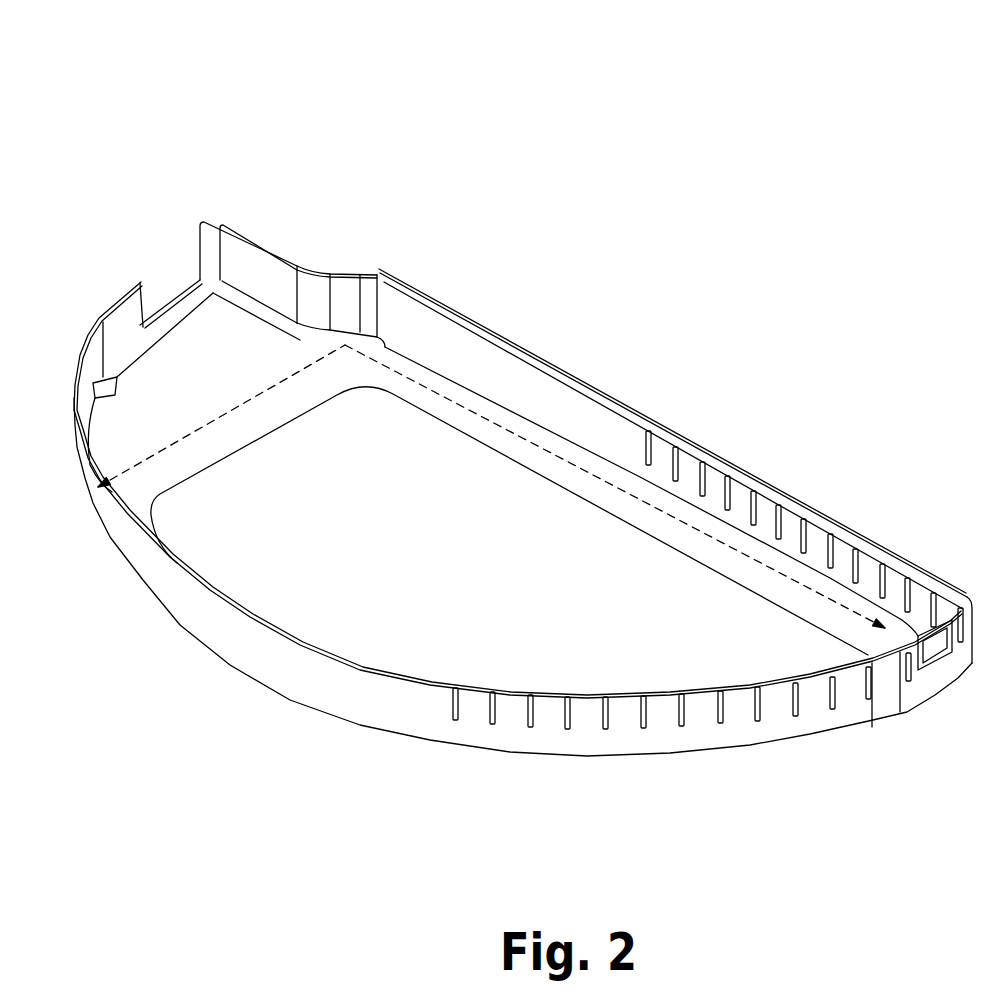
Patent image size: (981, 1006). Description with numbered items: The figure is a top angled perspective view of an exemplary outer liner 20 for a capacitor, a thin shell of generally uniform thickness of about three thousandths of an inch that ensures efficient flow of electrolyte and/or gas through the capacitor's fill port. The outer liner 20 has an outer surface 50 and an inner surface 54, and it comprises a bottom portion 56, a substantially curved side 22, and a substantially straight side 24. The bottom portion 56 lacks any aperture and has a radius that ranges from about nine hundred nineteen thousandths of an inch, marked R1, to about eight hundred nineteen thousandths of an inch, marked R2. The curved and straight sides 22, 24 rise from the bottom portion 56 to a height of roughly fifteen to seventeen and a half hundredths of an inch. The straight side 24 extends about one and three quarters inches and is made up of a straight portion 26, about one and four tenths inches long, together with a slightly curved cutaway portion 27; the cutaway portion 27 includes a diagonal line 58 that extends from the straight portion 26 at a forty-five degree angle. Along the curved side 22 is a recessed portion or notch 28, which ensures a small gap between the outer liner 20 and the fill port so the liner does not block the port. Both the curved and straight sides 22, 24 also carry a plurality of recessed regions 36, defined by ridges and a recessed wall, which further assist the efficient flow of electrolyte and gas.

The outer liner 20 is at (648, 122).
The substantially curved side 22 is at (343, 772).
The substantially straight side 24 is at (810, 462).
The straight portion 26 is at (573, 381).
The curved cutaway portion 27 is at (370, 257).
The recessed portion 28 is at (935, 650).
The recessed regions 36 is at (567, 697).
The outer surface 50 is at (233, 627).
The inner surface 54 is at (270, 278).
The bottom portion 56 is at (382, 547).
The diagonal line 58 is at (343, 320).
The bottom portion radius R1 is at (176, 427).
The bottom portion radius R2 is at (462, 417).